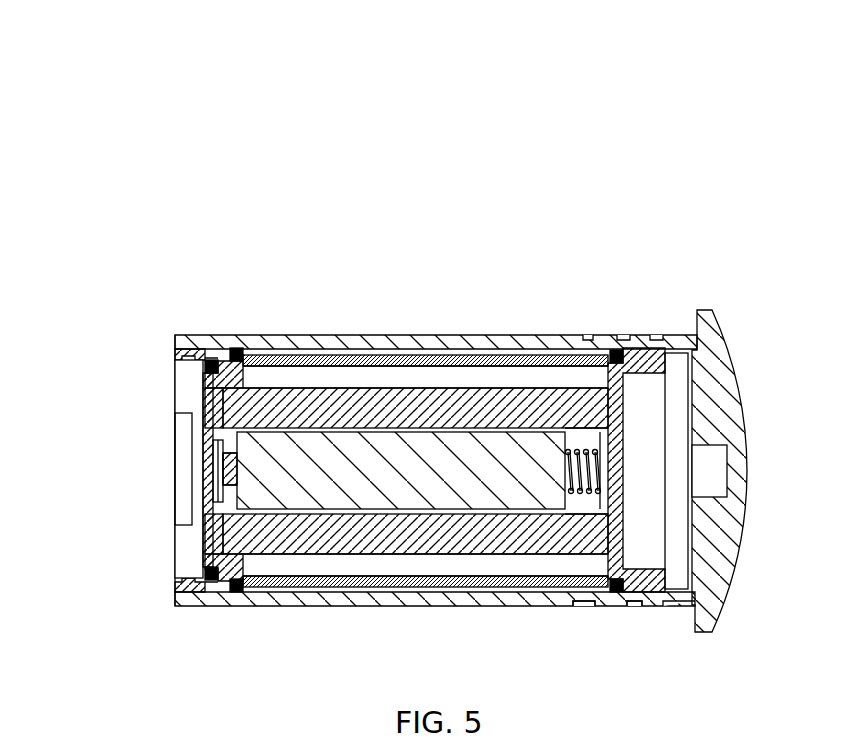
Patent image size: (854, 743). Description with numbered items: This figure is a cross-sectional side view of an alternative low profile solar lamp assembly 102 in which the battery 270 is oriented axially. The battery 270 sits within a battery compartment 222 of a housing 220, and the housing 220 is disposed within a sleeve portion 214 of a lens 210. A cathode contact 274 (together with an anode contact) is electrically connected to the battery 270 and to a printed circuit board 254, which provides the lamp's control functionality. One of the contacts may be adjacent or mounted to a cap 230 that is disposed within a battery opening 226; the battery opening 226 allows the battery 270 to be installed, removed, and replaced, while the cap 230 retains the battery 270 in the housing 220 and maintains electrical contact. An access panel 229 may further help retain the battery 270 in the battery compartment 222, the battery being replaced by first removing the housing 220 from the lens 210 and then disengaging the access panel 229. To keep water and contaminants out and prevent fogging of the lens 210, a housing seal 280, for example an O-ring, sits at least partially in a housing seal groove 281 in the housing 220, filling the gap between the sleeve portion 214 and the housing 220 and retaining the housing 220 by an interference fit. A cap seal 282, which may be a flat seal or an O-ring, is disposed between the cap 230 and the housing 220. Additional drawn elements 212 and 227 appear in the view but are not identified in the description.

The lamp assembly 102 is at (624, 146).
The lens 210 is at (712, 310).
The spring 212 is at (582, 449).
The sleeve portion 214 is at (362, 337).
The housing 220 is at (650, 590).
The battery compartment 222 is at (583, 504).
The battery opening 226 is at (175, 361).
The inner body 227 is at (453, 355).
The access panel 229 is at (425, 471).
The cap 230 is at (177, 403).
The printed circuit board 254 is at (677, 356).
The battery 270 is at (378, 497).
The cathode contact 274 is at (207, 527).
The housing seal 280 is at (240, 348).
The housing seal groove 281 is at (246, 349).
The cap seal 282 is at (208, 358).